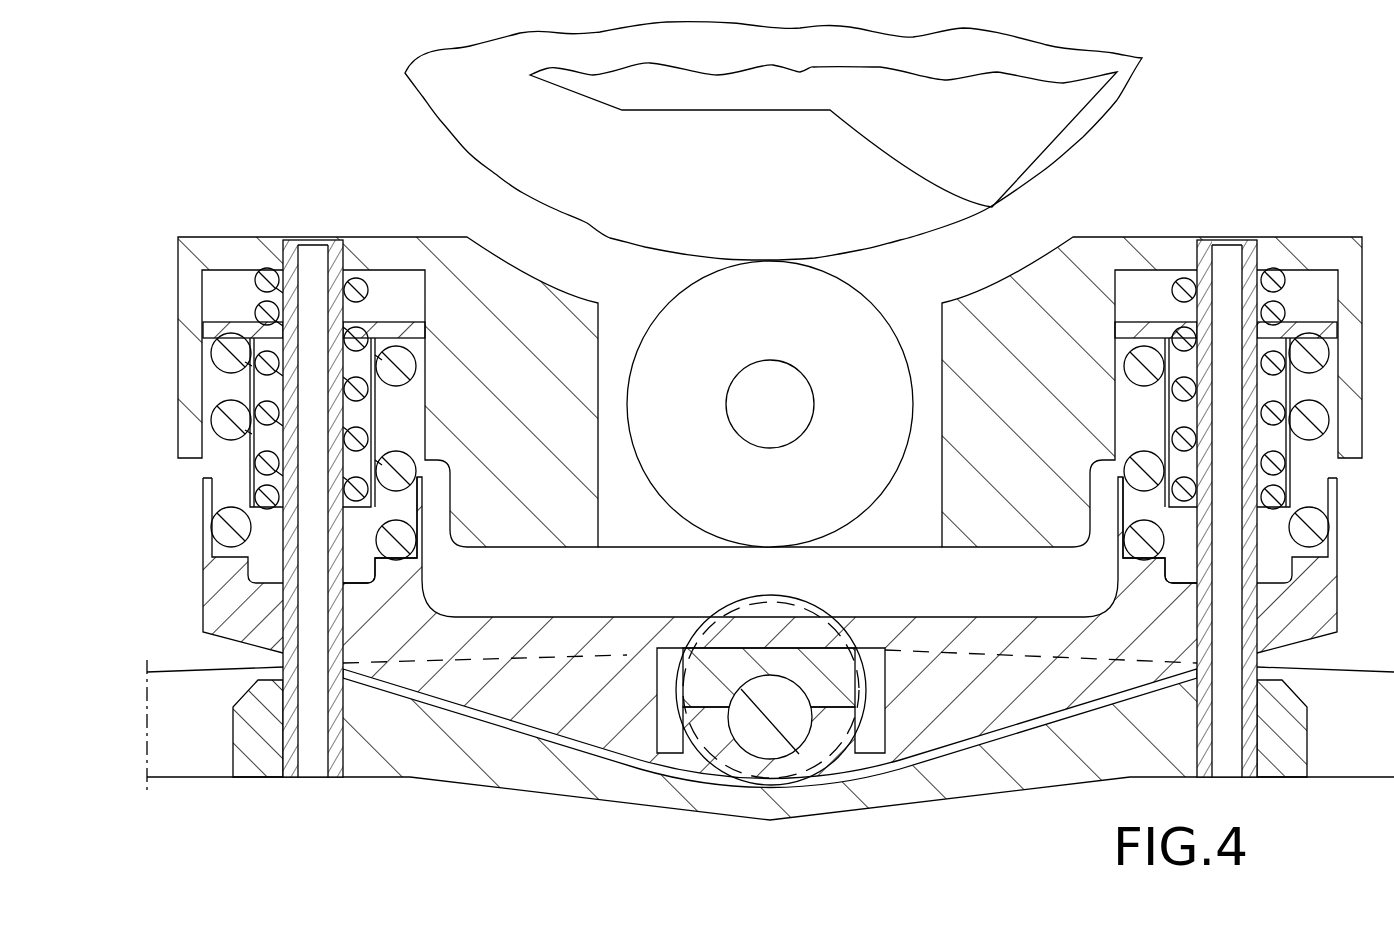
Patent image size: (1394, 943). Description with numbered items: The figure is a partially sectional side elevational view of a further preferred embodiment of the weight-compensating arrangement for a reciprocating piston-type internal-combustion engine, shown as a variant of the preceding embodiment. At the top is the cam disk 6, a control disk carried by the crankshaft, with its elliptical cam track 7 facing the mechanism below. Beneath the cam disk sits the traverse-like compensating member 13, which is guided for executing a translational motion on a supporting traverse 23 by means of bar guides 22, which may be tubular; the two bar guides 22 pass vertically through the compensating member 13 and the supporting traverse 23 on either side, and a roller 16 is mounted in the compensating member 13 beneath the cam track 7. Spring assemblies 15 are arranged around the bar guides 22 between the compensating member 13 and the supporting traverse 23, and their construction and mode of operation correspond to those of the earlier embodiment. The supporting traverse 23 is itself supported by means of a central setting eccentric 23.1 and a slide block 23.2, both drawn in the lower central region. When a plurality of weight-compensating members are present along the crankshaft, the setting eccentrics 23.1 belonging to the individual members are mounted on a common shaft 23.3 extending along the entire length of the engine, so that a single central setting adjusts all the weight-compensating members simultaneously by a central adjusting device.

The cam disk 6 is at (457, 78).
The cam track 7 is at (442, 122).
The compensating member 13 is at (1087, 258).
The spring assemblies 15 is at (186, 490).
The roller 16 is at (853, 312).
The bar guides 22 is at (288, 597).
The supporting traverse 23 is at (447, 675).
The setting eccentric 23.1 is at (657, 755).
The slide block 23.2 is at (853, 670).
The common shaft 23.3 is at (740, 733).